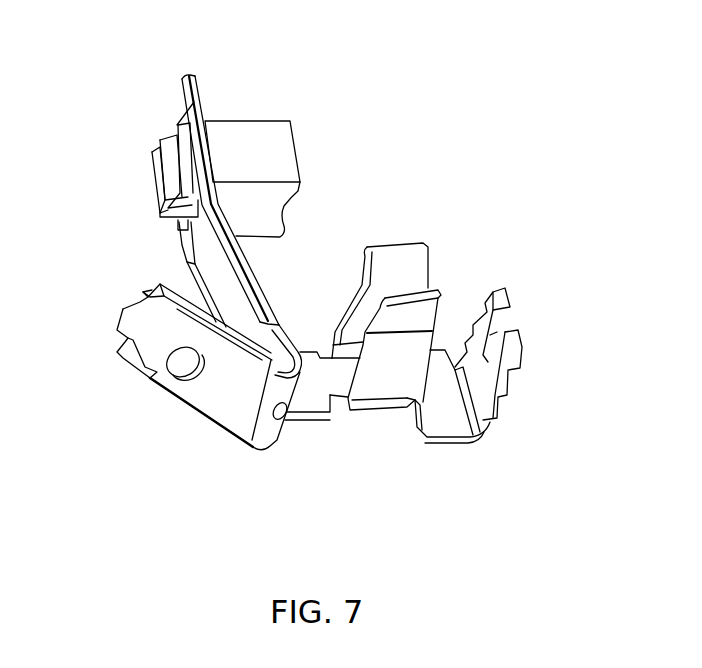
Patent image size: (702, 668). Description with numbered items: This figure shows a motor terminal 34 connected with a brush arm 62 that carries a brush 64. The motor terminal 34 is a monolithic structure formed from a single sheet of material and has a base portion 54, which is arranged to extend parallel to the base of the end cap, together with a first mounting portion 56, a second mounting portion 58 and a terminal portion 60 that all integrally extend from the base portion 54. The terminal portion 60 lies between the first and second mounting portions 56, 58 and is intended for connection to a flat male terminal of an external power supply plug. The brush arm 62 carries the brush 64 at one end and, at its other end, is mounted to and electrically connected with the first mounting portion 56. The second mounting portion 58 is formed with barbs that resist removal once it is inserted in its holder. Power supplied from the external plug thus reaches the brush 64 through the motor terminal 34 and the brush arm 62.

The motor terminal 34 is at (495, 212).
The base portion 54 is at (308, 390).
The first mounting portion 56 is at (160, 283).
The second mounting portion 58 is at (483, 383).
The terminal portion 60 is at (407, 262).
The brush arm 62 is at (212, 393).
The brush 64 is at (253, 140).